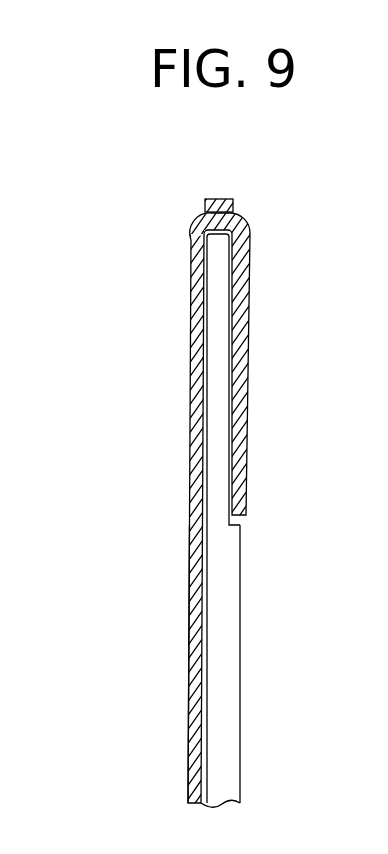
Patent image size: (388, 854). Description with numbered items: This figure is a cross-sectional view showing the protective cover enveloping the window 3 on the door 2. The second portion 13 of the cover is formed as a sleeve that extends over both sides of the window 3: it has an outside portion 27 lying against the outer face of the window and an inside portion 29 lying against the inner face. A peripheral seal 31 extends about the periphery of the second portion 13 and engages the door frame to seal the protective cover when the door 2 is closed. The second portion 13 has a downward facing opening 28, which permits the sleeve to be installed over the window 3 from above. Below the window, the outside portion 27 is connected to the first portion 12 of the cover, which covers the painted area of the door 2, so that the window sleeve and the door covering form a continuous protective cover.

The door 2 is at (246, 677).
The window 3 is at (222, 340).
The first portion 12 is at (180, 662).
The second portion 13 is at (182, 418).
The outside portion 27 is at (191, 352).
The downward facing opening 28 is at (220, 527).
The inside portion 29 is at (243, 258).
The peripheral seal 31 is at (220, 200).